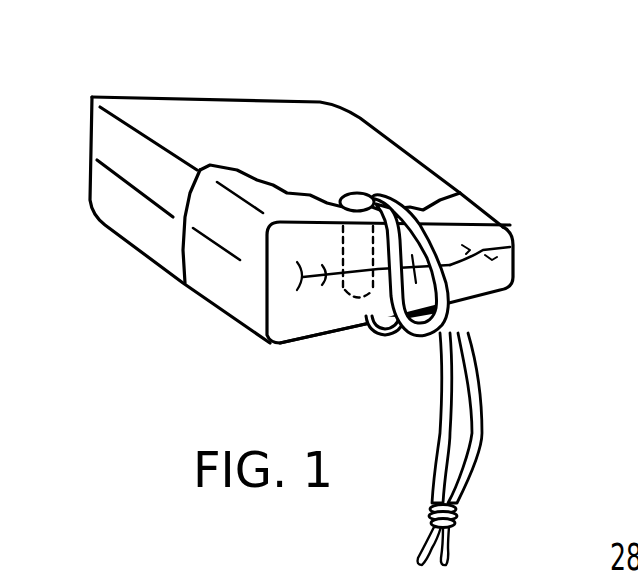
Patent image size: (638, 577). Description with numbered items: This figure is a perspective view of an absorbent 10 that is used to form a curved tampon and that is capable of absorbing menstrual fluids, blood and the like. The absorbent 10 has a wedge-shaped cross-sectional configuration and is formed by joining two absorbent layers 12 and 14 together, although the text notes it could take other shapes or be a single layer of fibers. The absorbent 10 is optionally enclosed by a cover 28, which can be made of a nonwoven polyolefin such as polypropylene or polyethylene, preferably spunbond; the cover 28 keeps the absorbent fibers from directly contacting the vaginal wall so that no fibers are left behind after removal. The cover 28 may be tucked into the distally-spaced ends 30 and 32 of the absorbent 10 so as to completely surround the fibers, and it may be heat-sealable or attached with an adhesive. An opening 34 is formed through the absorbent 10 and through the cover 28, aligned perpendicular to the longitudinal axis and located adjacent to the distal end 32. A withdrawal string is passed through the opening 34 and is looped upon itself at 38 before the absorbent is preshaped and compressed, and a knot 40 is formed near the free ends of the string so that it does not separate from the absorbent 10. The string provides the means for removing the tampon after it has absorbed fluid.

The absorbent 10 is at (378, 65).
The absorbent layer 12 is at (297, 243).
The absorbent layer 14 is at (307, 310).
The cover 28 is at (205, 115).
The distally-spaced end 30 is at (92, 130).
The distal end 32 is at (510, 247).
The opening 34 is at (352, 194).
The loop of withdrawal string 38 is at (450, 316).
The knot 40 is at (457, 503).